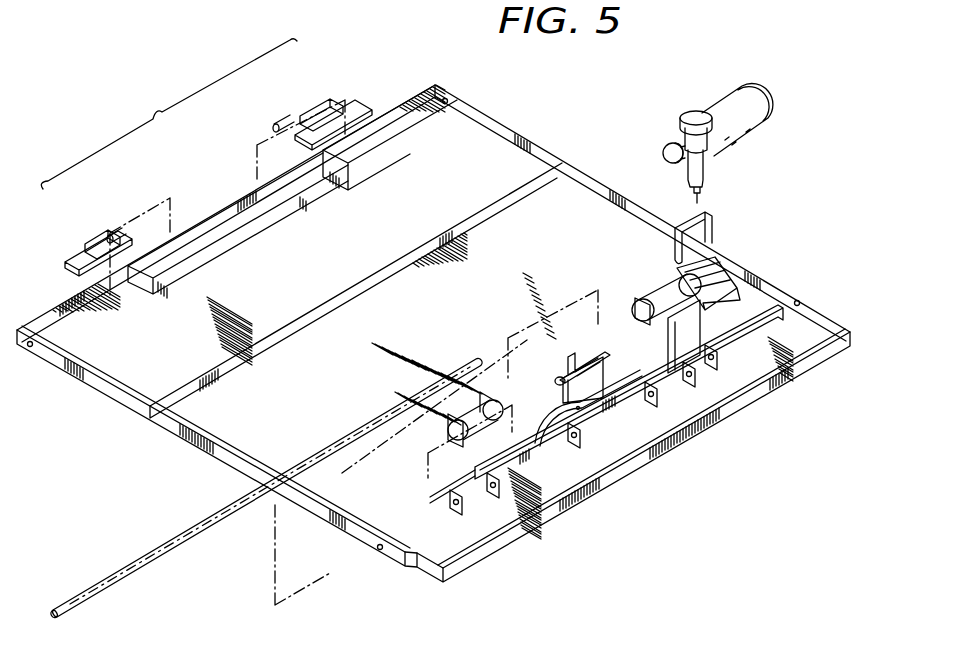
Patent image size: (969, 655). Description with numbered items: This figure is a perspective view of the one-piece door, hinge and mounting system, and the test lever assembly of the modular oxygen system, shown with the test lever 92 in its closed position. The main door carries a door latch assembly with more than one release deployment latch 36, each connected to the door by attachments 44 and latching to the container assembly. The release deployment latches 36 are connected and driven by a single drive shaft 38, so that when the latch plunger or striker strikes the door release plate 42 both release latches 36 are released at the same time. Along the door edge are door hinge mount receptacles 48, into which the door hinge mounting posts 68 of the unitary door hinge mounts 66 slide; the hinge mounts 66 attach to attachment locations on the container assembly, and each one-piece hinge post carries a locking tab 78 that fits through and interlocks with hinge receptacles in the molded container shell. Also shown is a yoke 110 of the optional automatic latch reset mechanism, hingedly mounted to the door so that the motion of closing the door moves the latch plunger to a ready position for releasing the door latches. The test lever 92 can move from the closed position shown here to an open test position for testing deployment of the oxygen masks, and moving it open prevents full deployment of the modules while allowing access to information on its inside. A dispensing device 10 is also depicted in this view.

The dispensing device 10 is at (710, 165).
The yoke 110 is at (683, 218).
The door release plate 42 is at (712, 275).
The release deployment latch 36 is at (645, 305).
The test lever 92 is at (563, 368).
The drive shaft 38 is at (205, 524).
The attachments 44 is at (452, 512).
The door hinge mount receptacles 48 is at (143, 281).
The unitary door hinge mount 66 is at (347, 100).
The door hinge mounting post 68 is at (283, 122).
The locking tab 78 is at (324, 115).